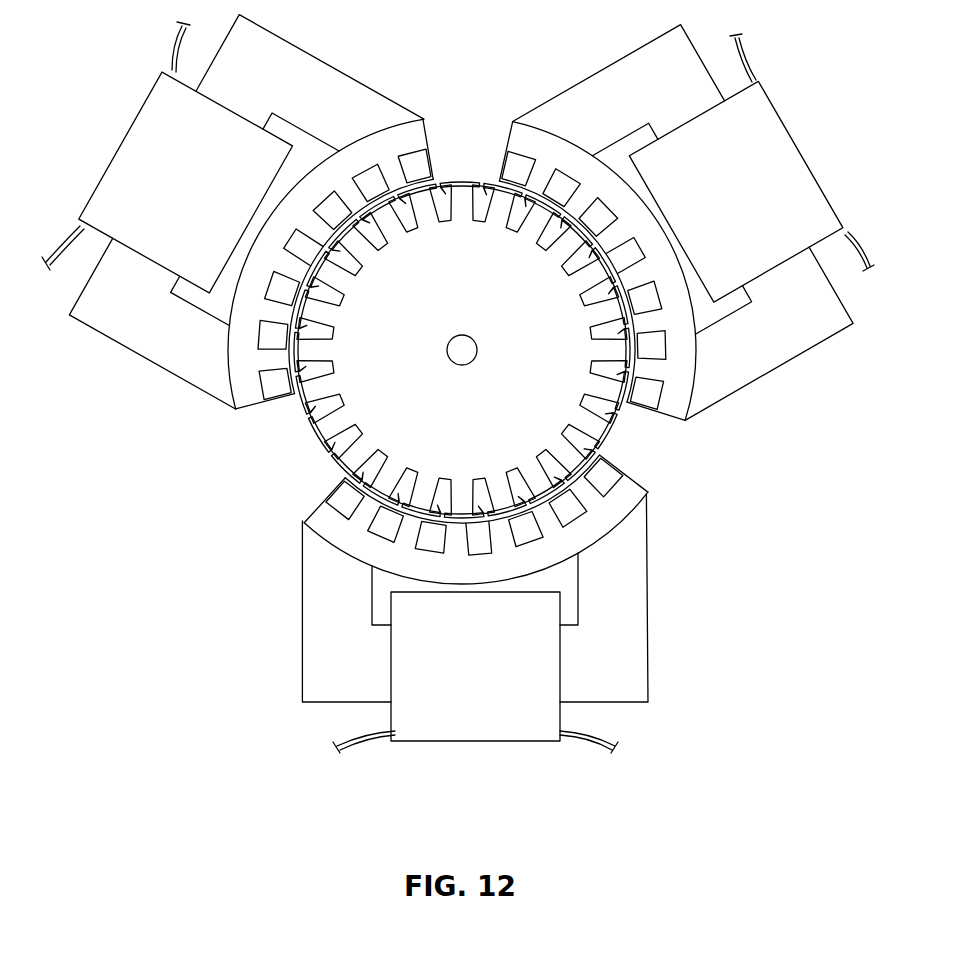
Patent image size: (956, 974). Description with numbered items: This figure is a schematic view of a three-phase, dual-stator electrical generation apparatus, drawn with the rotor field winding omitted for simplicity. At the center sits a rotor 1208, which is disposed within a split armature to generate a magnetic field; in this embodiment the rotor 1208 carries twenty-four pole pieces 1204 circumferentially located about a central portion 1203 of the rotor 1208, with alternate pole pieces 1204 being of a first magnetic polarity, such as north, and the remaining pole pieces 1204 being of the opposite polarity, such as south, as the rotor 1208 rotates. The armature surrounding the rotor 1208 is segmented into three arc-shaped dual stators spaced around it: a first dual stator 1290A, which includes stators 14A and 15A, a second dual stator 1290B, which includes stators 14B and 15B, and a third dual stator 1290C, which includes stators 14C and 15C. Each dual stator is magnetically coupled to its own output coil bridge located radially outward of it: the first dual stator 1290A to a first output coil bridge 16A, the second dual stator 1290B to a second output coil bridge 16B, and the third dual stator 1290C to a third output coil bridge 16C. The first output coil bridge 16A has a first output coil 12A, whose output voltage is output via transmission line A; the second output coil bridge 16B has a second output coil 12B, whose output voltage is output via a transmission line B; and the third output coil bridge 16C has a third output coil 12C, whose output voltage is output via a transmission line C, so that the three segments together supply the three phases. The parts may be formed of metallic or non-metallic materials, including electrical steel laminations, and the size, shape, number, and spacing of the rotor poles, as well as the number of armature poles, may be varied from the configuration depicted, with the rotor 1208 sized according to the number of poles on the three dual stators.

The first output coil 12A is at (760, 205).
The second output coil 12B is at (499, 679).
The third output coil 12C is at (209, 196).
The stator 14A is at (683, 350).
The stator 14B is at (372, 550).
The stator 14C is at (352, 162).
The stator 15A is at (690, 400).
The stator 15B is at (332, 507).
The stator 15C is at (404, 148).
The first output coil bridge 16A is at (600, 92).
The second output coil bridge 16B is at (630, 597).
The third output coil bridge 16C is at (148, 338).
The first dual stator 1290A is at (665, 233).
The second dual stator 1290B is at (477, 596).
The third dual stator 1290C is at (263, 232).
The central portion 1203 is at (497, 238).
The pole pieces 1204 is at (593, 428).
The rotor 1208 is at (494, 317).
The transmission line A is at (745, 63).
The transmission line B is at (600, 752).
The transmission line C is at (66, 243).